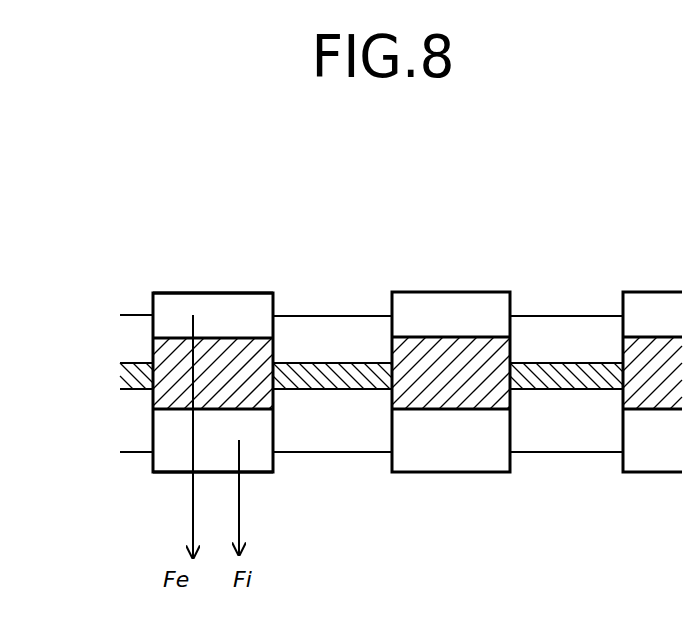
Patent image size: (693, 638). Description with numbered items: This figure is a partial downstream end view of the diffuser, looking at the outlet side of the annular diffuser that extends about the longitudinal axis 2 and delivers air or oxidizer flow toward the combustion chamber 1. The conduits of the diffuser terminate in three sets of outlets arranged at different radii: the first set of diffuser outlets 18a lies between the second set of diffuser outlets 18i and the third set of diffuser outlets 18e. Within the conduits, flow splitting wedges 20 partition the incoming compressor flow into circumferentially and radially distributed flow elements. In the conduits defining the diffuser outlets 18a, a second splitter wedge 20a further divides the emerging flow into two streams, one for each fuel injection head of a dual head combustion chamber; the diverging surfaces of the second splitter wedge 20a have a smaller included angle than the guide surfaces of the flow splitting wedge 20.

The combustion chamber 1 is at (174, 338).
The longitudinal axis 2 is at (341, 232).
The diffuser outlets 18a is at (329, 327).
The diffuser outlets 18e is at (178, 299).
The diffuser outlets 18i is at (170, 459).
The flow splitting wedge 20 is at (168, 353).
The second splitter wedge 20a is at (342, 380).